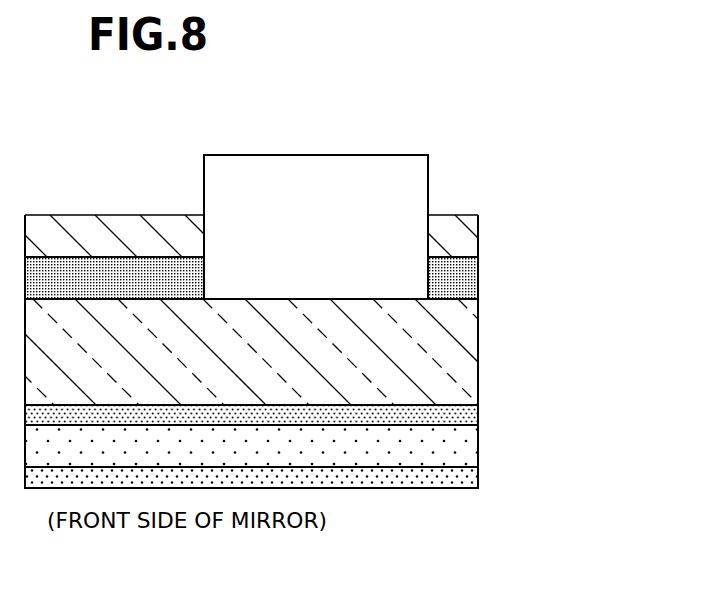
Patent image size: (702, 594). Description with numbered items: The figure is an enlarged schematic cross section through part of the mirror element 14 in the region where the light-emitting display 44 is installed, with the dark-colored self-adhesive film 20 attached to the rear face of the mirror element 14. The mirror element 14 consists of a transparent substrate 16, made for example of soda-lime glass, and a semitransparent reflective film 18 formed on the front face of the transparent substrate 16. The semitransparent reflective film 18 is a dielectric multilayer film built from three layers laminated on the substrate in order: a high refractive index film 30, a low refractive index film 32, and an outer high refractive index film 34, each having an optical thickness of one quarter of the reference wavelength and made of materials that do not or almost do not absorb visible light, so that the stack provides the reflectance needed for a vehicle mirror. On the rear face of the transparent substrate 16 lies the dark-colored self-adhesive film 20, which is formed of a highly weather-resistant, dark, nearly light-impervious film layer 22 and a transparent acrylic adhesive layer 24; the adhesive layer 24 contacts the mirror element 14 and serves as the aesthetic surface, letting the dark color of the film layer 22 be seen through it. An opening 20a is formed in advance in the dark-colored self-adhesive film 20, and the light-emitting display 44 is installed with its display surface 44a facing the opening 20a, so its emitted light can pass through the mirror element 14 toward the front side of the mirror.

The light-emitting display 44 is at (303, 193).
The display surface 44a is at (318, 299).
The dark-colored self-adhesive film 20 is at (327, 257).
The opening 20a is at (428, 234).
The film layer 22 is at (457, 237).
The adhesive layer 24 is at (457, 275).
The mirror element 14 is at (326, 397).
The transparent substrate 16 is at (450, 345).
The semitransparent reflective film 18 is at (311, 442).
The high refractive index film 30 is at (473, 413).
The low refractive index film 32 is at (473, 440).
The high refractive index film 34 is at (283, 477).